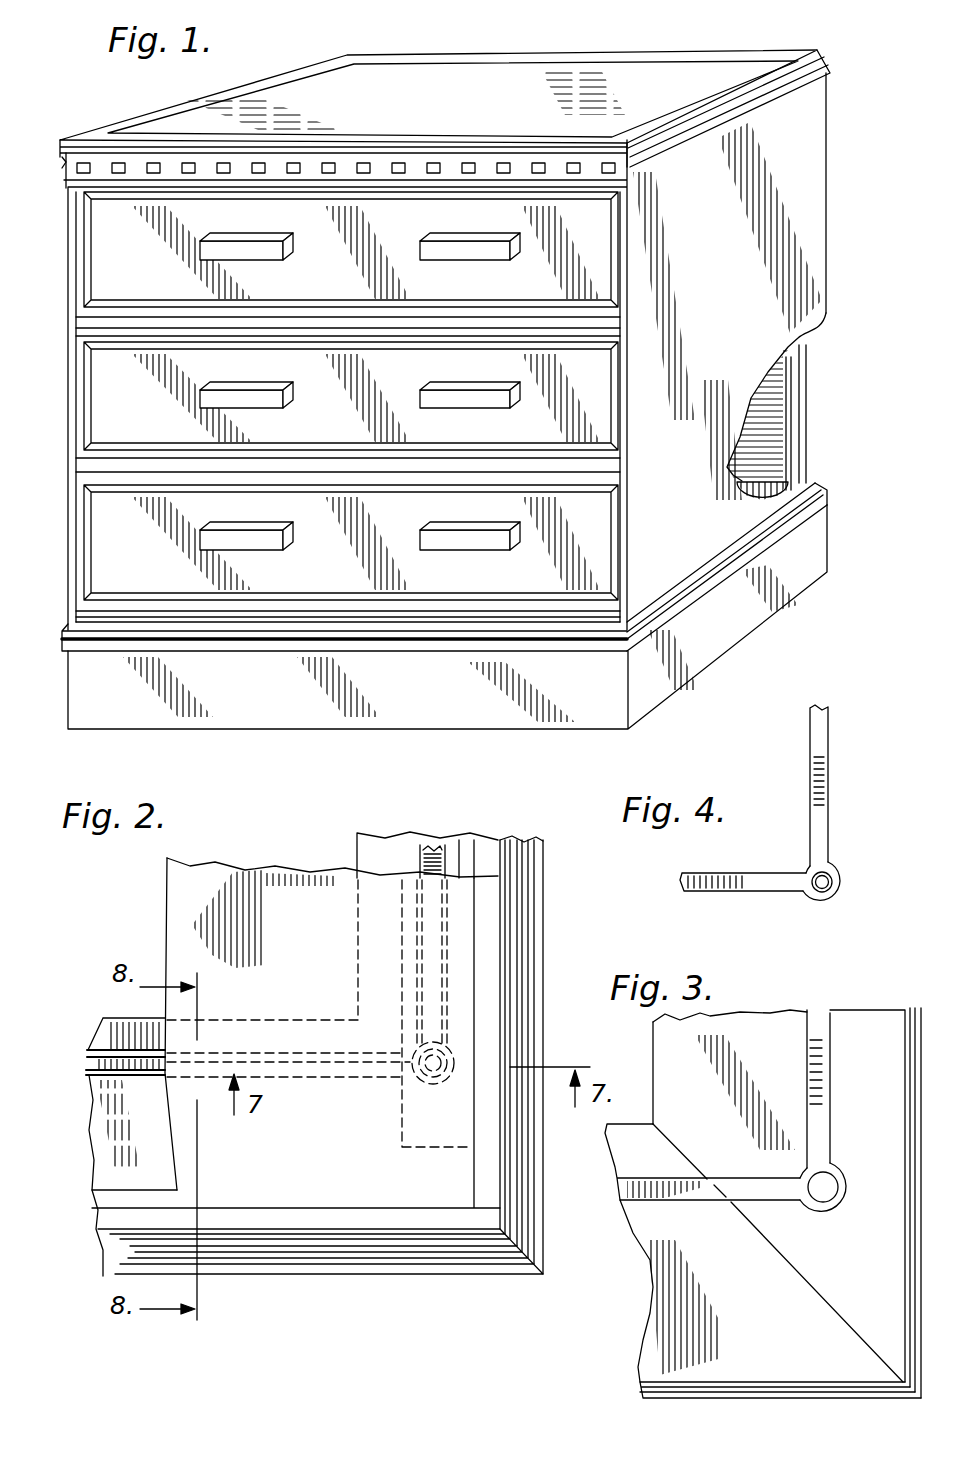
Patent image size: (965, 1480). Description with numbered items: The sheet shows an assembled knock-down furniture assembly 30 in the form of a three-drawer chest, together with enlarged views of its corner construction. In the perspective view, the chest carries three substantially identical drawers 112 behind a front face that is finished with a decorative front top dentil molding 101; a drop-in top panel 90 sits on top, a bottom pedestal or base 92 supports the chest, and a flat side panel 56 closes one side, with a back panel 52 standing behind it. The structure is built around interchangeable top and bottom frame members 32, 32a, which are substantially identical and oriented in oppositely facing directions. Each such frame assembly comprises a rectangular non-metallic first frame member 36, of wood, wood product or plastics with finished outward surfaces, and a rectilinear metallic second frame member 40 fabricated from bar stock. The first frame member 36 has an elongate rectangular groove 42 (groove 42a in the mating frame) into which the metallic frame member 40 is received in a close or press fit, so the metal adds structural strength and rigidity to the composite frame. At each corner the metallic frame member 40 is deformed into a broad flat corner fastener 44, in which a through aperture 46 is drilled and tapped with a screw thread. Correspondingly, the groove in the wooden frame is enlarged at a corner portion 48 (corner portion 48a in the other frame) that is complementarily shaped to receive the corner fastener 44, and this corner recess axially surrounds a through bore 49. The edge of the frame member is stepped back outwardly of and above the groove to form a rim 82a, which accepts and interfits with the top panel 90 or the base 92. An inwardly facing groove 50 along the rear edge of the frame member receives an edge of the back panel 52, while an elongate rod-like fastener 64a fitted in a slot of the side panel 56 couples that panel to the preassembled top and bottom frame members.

In FIG. 1, the knock-down furniture assembly 30 is at (92, 105).
In FIG. 1, the frame member 32 is at (313, 650).
In FIG. 1, the frame member 32a is at (824, 50).
In FIG. 2, the frame member 32a is at (553, 918).
In FIG. 2, the first frame member 36 is at (148, 1132).
In FIG. 3, the first frame member 36 is at (728, 1083).
In FIG. 2, the second frame member 40 is at (445, 850).
In FIG. 4, the second frame member 40 is at (810, 758).
In FIG. 3, the groove 42 is at (807, 1032).
In FIG. 2, the groove 42a is at (427, 838).
In FIG. 2, the corner fastener 44 is at (415, 1090).
In FIG. 4, the corner fastener 44 is at (842, 881).
In FIG. 2, the through aperture 46 is at (417, 1048).
In FIG. 4, the through aperture 46 is at (834, 901).
In FIG. 3, the corner portion 48 is at (832, 1209).
In FIG. 2, the corner portion 48a is at (452, 1096).
In FIG. 1, the through bore 49 is at (823, 497).
In FIG. 3, the through bore 49 is at (823, 1162).
In FIG. 1, the groove 50 is at (727, 476).
In FIG. 1, the back panel 52 is at (806, 414).
In FIG. 1, the side panel 56 is at (753, 255).
In FIG. 1, the rod-like fastener 64a is at (792, 382).
In FIG. 2, the rim 82a is at (155, 1188).
In FIG. 1, the top panel 90 is at (478, 95).
In FIG. 2, the top panel 90 is at (316, 925).
In FIG. 1, the base 92 is at (608, 695).
In FIG. 1, the front top dentil molding 101 is at (66, 172).
In FIG. 1, the drawer 112 is at (134, 282).